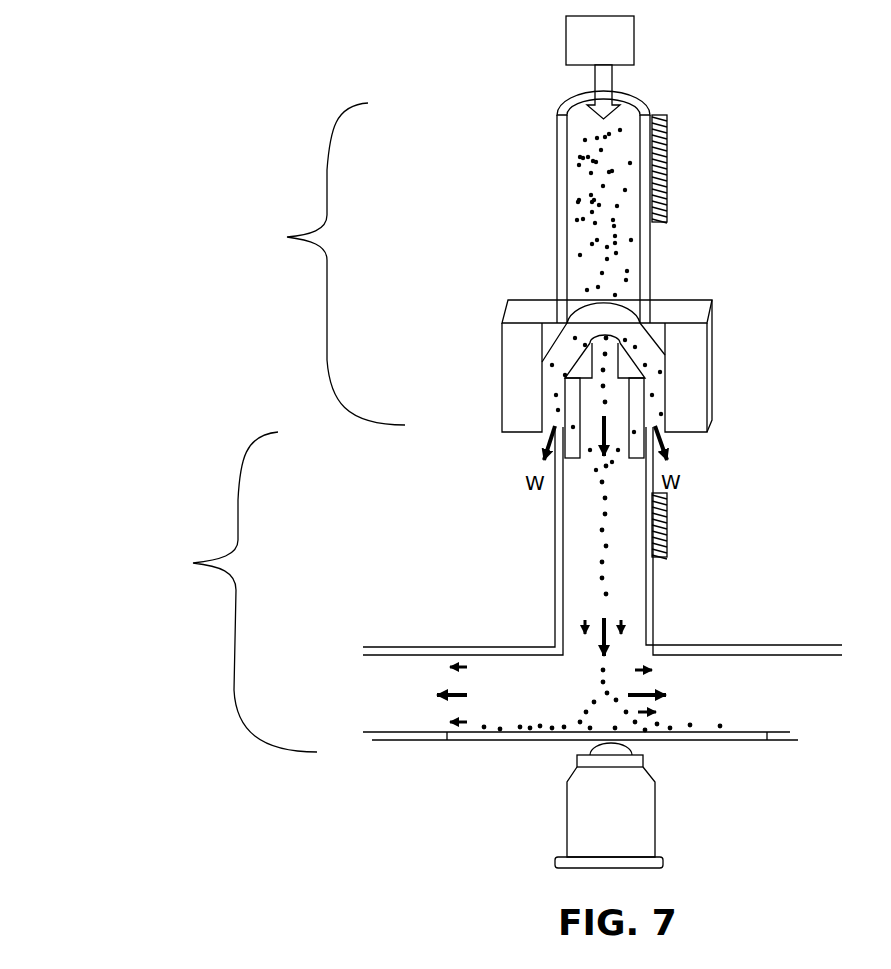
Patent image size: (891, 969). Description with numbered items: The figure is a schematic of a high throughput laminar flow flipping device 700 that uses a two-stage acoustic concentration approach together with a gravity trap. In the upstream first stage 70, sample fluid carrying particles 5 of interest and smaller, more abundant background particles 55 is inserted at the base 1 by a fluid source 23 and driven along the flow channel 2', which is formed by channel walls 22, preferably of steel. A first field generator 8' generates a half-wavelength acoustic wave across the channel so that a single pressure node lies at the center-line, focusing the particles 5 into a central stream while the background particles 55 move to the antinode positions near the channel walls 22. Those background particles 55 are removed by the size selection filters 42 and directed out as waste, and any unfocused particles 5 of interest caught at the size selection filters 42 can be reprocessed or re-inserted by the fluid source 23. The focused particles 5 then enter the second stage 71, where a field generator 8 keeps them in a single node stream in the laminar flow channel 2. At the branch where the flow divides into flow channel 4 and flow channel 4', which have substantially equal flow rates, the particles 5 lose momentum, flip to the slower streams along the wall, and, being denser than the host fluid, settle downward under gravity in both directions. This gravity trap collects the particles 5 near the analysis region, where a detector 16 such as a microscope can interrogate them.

The fluid source 23 is at (600, 67).
The base 1 is at (640, 96).
The flow channel 2' is at (564, 219).
The channel walls 22 is at (650, 272).
The first field generator 8' is at (710, 169).
The field generator 8 is at (684, 526).
The device 700 is at (518, 112).
The size selection filters 42 is at (565, 338).
The particles 5 is at (603, 212).
The background particles 55 is at (580, 212).
The flow channel 2 is at (569, 496).
The flow channel 4 is at (474, 638).
The flow channel 4' is at (727, 638).
The detector 16 is at (609, 805).
The first stage 70 is at (326, 264).
The second stage 71 is at (237, 592).